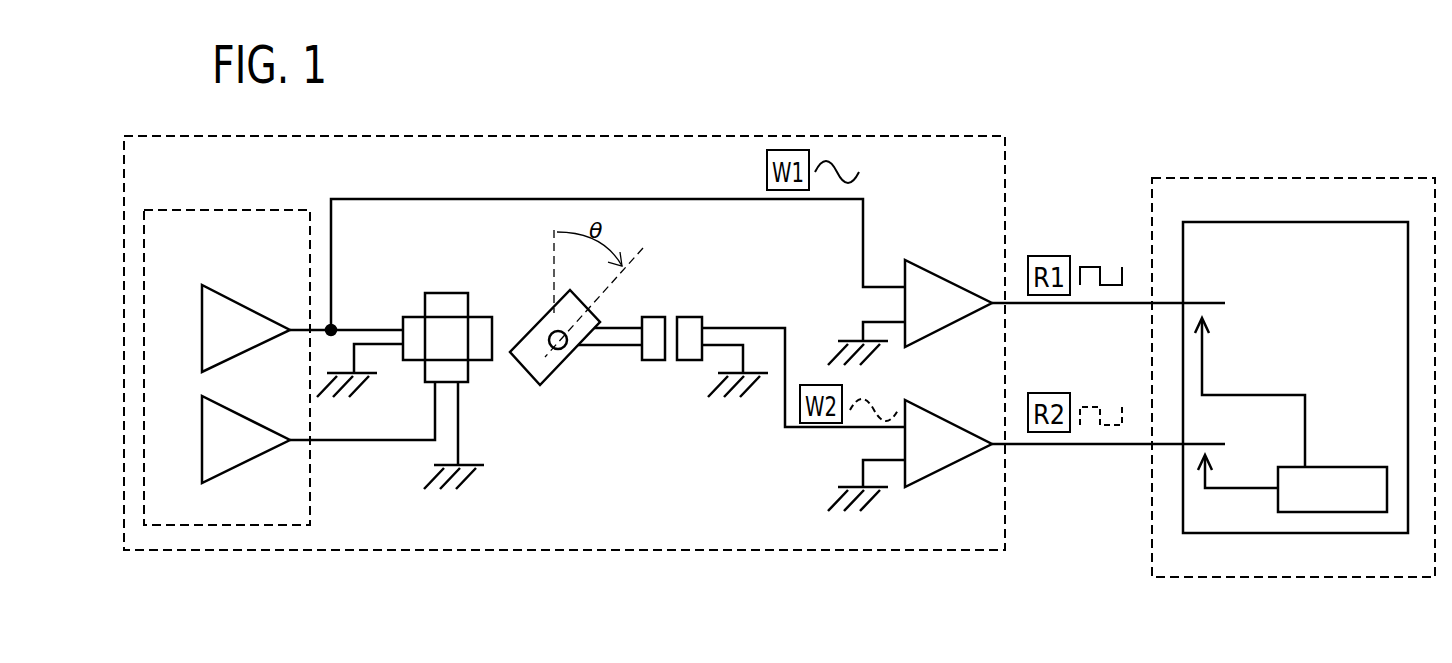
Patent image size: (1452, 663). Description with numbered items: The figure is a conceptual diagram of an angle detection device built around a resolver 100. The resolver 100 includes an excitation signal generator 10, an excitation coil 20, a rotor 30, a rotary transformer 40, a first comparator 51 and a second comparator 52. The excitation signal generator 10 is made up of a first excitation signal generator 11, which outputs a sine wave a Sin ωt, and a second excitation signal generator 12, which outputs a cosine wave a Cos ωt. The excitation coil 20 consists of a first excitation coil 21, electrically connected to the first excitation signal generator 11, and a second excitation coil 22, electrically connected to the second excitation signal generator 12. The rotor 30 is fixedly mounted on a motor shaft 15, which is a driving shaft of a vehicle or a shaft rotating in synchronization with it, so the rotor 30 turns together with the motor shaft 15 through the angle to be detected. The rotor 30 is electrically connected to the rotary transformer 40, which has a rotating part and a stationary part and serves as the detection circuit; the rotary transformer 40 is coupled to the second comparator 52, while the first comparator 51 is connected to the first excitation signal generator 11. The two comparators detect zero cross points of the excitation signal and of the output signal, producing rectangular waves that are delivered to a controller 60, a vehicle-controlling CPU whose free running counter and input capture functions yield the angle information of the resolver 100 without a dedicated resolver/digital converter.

The resolver 100 is at (638, 134).
The excitation signal generator 10 is at (172, 530).
The first excitation signal generator 11 is at (217, 328).
The second excitation signal generator 12 is at (217, 436).
The excitation coil 20 is at (446, 300).
The first excitation coil 21 is at (482, 320).
The second excitation coil 22 is at (449, 300).
The rotor 30 is at (532, 380).
The motor shaft 15 is at (566, 346).
The rotary transformer 40 is at (690, 302).
The first comparator 51 is at (930, 290).
The second comparator 52 is at (937, 460).
The controller 60 is at (1335, 240).